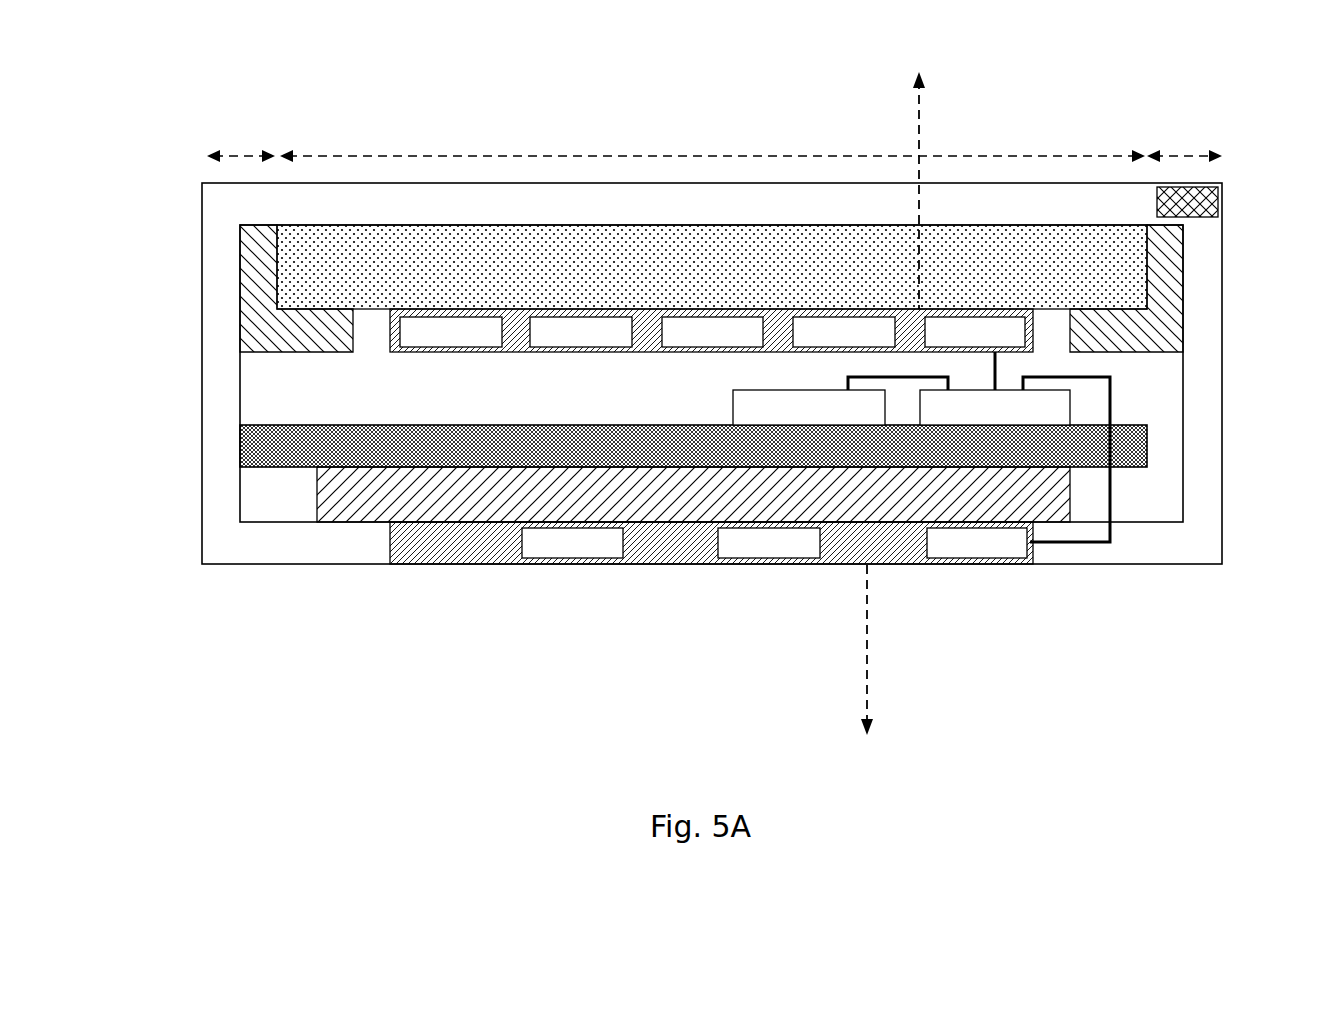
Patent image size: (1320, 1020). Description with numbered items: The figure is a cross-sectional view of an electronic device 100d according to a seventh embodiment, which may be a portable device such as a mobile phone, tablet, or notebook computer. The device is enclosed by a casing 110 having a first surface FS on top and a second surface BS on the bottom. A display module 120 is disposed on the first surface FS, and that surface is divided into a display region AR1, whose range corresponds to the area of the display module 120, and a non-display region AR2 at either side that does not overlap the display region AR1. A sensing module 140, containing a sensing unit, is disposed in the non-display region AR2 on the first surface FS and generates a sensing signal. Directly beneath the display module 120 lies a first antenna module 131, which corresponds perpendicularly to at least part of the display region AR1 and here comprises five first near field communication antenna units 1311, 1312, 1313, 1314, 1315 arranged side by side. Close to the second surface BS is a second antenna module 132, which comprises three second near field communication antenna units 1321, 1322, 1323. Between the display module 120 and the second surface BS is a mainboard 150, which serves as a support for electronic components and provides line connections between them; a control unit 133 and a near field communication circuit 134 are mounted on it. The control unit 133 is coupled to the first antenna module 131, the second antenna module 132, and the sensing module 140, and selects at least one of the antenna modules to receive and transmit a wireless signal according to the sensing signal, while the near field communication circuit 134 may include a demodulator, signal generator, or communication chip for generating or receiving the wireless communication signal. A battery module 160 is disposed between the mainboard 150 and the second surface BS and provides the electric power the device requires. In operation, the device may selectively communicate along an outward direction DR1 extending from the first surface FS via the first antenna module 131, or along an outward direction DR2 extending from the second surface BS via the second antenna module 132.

The electronic device 100d is at (148, 51).
The casing 110 is at (212, 429).
The display module 120 is at (712, 267).
The first antenna module 131 is at (711, 470).
The first near field communication antenna unit 1311 is at (451, 332).
The first near field communication antenna unit 1312 is at (581, 332).
The first near field communication antenna unit 1313 is at (712, 332).
The first near field communication antenna unit 1314 is at (844, 332).
The first near field communication antenna unit 1315 is at (975, 332).
The second antenna module 132 is at (711, 593).
The second near field communication antenna unit 1321 is at (572, 543).
The second near field communication antenna unit 1322 is at (769, 543).
The second near field communication antenna unit 1323 is at (977, 543).
The control unit 133 is at (809, 407).
The near field communication circuit 134 is at (995, 407).
The sensing module 140 is at (1192, 206).
The mainboard 150 is at (693, 446).
The battery module 160 is at (693, 494).
The first surface FS is at (391, 178).
The second surface BS is at (322, 571).
The display region AR1 is at (712, 139).
The non-display region AR2 is at (714, 139).
The outward direction DR1 is at (922, 107).
The outward direction DR2 is at (868, 690).